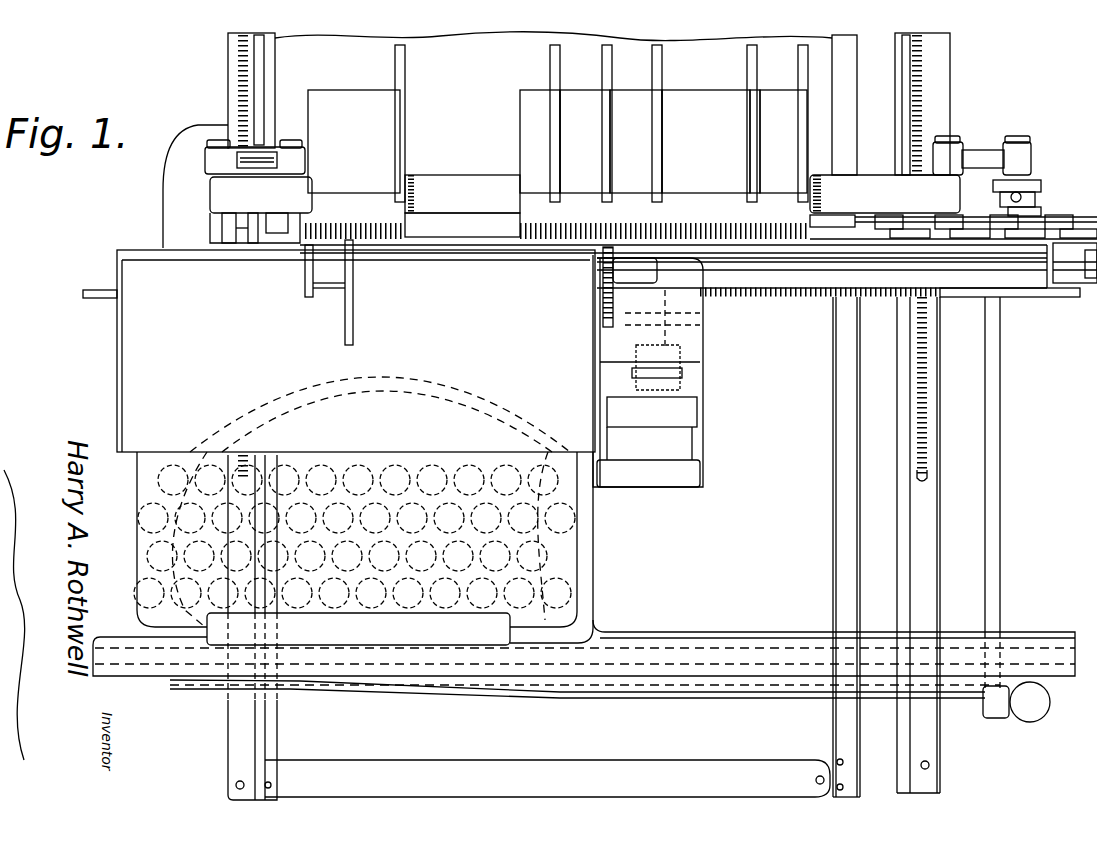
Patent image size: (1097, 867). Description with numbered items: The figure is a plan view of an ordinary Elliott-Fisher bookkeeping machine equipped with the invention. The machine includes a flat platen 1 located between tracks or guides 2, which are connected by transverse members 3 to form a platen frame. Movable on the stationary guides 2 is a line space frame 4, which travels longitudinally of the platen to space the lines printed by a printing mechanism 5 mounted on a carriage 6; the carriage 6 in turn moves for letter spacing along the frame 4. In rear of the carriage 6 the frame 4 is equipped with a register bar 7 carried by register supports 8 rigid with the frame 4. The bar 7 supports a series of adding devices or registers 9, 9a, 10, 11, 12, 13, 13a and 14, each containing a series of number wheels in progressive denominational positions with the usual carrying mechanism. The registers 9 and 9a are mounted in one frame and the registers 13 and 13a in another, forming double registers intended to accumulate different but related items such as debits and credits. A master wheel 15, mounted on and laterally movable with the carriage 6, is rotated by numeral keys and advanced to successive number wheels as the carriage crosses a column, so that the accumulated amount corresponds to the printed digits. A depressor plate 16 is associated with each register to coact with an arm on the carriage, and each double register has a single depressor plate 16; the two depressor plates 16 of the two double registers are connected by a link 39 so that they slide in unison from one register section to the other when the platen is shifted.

The flat platen 1 is at (815, 523).
The tracks or guides 2 is at (258, 707).
The transverse members 3 is at (872, 665).
The line space frame 4 is at (1025, 289).
The printing mechanism 5 is at (148, 523).
The carriage 6 is at (135, 378).
The register bar 7 is at (443, 186).
The register supports 8 is at (290, 153).
The register 9 is at (326, 99).
The register 9a is at (367, 99).
The register 10 is at (533, 99).
The register 11 is at (581, 99).
The register 12 is at (630, 99).
The register 13 is at (678, 98).
The register 13a is at (733, 98).
The register 14 is at (781, 98).
The master wheel 15 is at (345, 323).
The depressor plate 16 is at (312, 249).
The link 39 is at (455, 229).